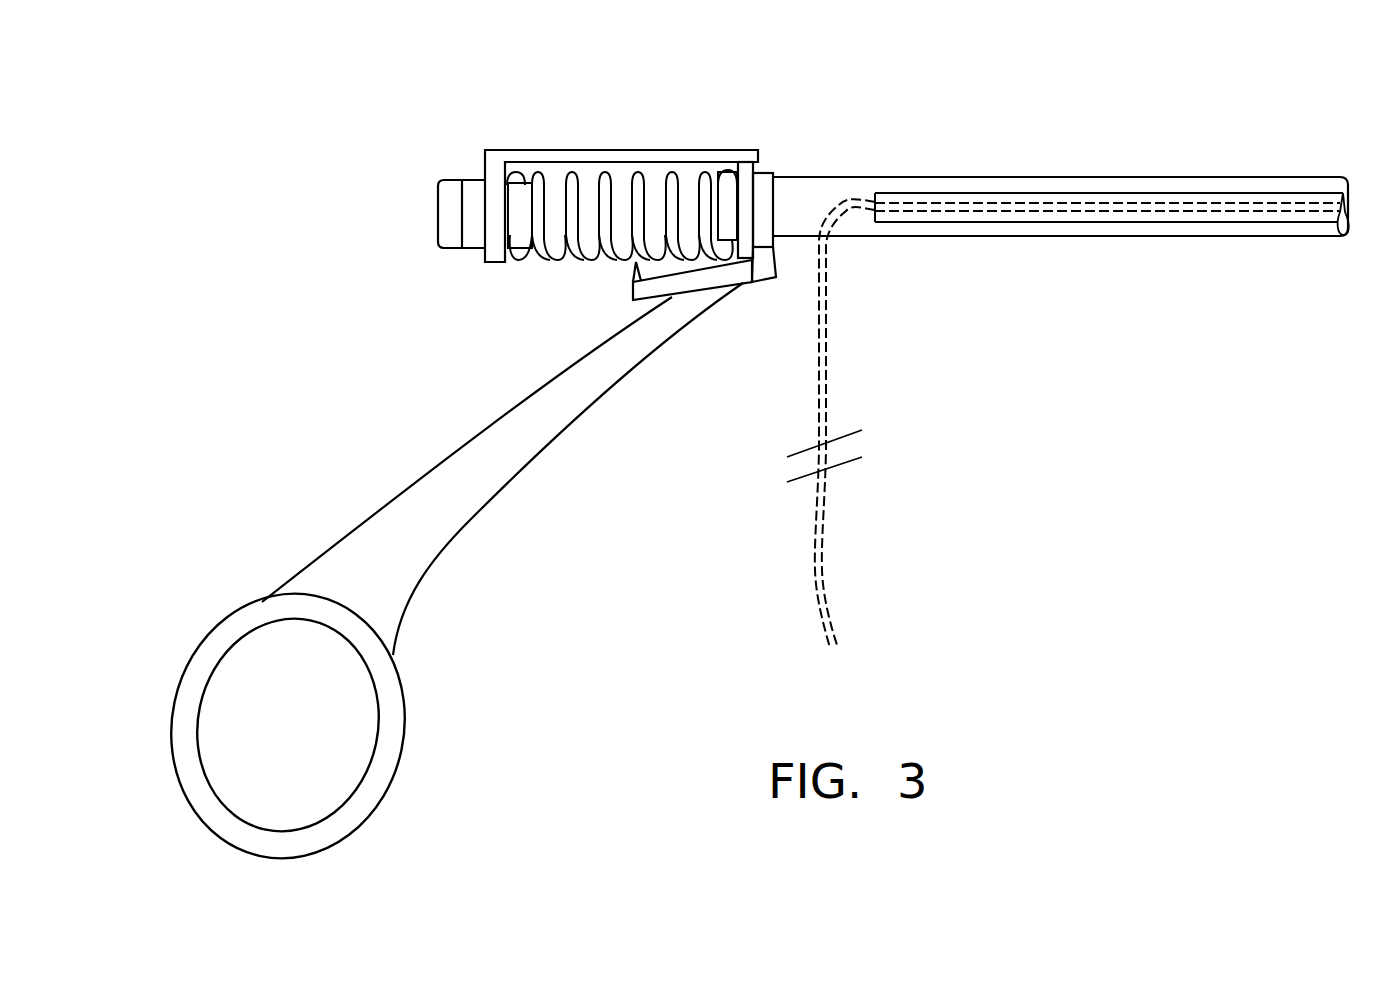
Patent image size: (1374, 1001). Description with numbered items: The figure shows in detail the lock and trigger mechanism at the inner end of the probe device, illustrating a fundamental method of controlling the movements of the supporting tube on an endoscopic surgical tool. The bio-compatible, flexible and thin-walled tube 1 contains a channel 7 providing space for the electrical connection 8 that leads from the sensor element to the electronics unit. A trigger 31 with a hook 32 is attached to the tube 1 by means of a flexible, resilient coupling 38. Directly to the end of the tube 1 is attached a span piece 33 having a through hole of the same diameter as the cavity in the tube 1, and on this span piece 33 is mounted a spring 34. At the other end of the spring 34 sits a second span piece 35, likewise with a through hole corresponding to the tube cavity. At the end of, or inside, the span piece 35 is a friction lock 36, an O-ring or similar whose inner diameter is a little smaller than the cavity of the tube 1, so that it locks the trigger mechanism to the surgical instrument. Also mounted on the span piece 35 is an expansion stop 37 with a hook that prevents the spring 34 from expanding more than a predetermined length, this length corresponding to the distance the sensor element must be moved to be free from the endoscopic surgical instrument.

The tube 1 is at (1081, 242).
The channel 7 is at (1014, 191).
The electrical connection 8 is at (830, 582).
The trigger 31 is at (382, 806).
The hook 32 is at (630, 290).
The span piece 33 is at (779, 166).
The spring 34 is at (613, 177).
The span piece 35 is at (478, 177).
The friction lock 36 is at (430, 199).
The expansion stop 37 is at (706, 148).
The flexible, resilient coupling 38 is at (777, 280).